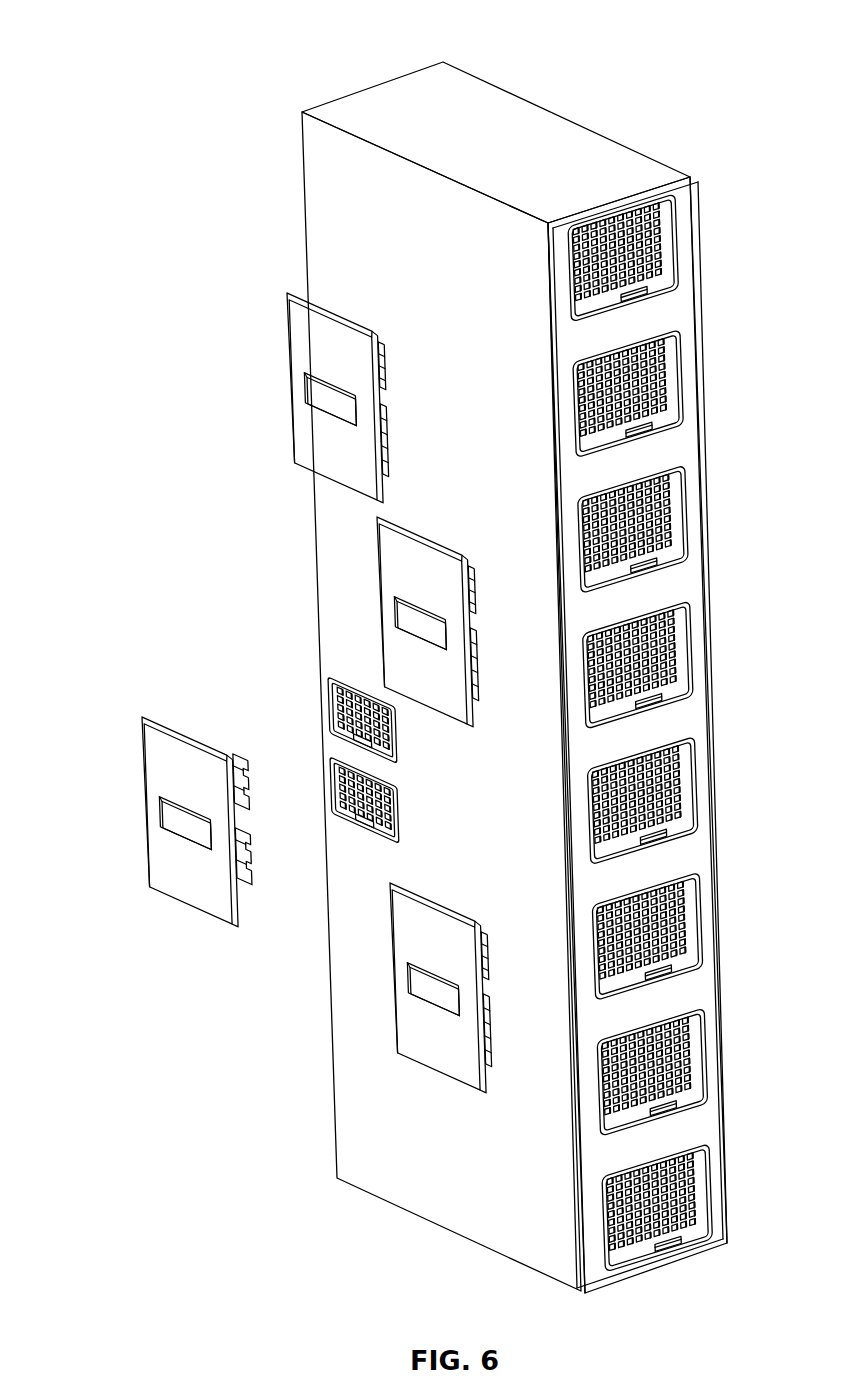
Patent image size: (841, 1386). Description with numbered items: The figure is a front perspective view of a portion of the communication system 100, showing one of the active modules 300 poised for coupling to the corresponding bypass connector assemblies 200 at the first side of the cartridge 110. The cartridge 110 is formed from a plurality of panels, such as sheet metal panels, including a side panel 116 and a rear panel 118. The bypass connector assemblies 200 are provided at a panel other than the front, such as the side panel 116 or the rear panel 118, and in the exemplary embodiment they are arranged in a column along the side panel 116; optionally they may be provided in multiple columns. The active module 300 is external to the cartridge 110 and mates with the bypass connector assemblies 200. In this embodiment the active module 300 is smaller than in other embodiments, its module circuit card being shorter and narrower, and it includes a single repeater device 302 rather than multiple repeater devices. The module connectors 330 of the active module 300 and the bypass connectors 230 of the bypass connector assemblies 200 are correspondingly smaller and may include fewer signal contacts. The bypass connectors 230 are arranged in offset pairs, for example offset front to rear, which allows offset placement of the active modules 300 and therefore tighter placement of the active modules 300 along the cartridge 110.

The communication system 100 is at (239, 36).
The cartridge 110 is at (564, 138).
The side panel 116 is at (338, 227).
The rear panel 118 is at (390, 80).
The bypass connector assembly 200 is at (320, 708).
The bypass connector 230 is at (330, 820).
The active module 300 is at (125, 701).
The repeater device 302 is at (175, 820).
The module connector 330 is at (252, 860).